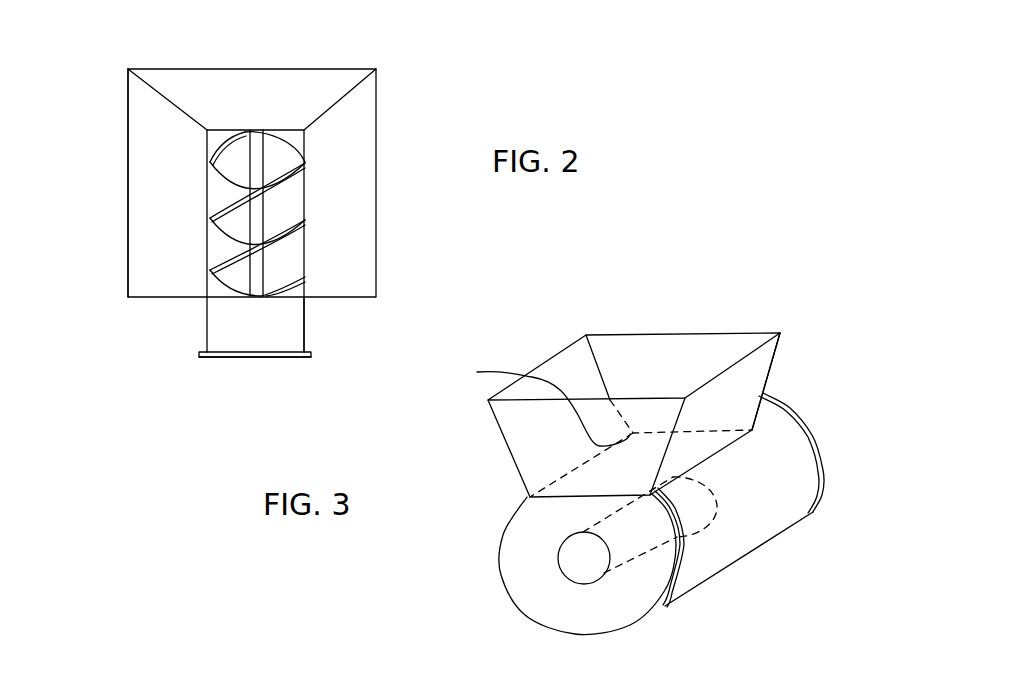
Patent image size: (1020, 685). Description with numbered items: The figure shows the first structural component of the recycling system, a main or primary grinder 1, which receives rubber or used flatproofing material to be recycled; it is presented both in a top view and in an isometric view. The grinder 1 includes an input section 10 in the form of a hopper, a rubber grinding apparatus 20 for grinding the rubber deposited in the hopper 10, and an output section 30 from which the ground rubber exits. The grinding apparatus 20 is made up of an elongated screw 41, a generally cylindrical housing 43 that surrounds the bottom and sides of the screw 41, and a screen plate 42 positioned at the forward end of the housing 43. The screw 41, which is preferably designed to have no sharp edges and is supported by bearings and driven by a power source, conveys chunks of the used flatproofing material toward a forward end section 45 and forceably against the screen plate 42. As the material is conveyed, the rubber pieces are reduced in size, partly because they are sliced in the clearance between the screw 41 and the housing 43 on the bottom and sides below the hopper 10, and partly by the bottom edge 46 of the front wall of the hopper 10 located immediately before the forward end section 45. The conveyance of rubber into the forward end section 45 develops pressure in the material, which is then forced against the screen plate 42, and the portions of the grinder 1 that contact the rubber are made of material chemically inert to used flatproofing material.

In FIG. 2, the grinder 1 is at (62, 82).
In FIG. 3, the grinder 1 is at (853, 375).
In FIG. 2, the input section 10 is at (367, 110).
In FIG. 3, the input section 10 is at (703, 349).
In FIG. 2, the rubber grinding apparatus 20 is at (227, 272).
In FIG. 3, the rubber grinding apparatus 20 is at (572, 552).
In FIG. 2, the output section 30 is at (268, 362).
In FIG. 3, the output section 30 is at (815, 446).
In FIG. 2, the elongated screw 41 is at (292, 160).
In FIG. 2, the screen plate 42 is at (208, 360).
In FIG. 3, the screen plate 42 is at (785, 393).
In FIG. 2, the housing 43 is at (307, 308).
In FIG. 3, the housing 43 is at (700, 560).
In FIG. 2, the forward end section 45 is at (282, 328).
In FIG. 3, the forward end section 45 is at (783, 444).
In FIG. 3, the bottom edge of the front wall of the hopper 46 is at (539, 403).